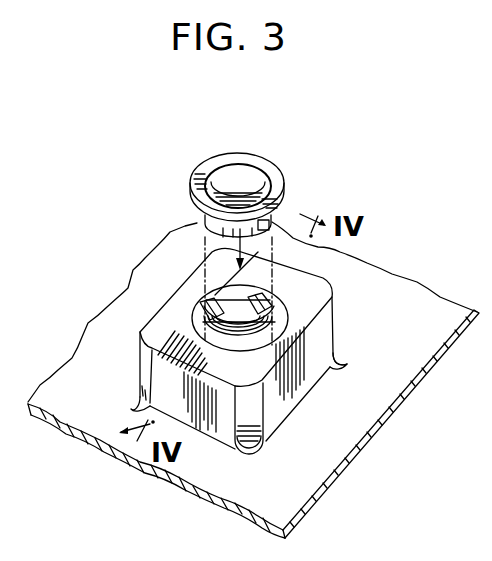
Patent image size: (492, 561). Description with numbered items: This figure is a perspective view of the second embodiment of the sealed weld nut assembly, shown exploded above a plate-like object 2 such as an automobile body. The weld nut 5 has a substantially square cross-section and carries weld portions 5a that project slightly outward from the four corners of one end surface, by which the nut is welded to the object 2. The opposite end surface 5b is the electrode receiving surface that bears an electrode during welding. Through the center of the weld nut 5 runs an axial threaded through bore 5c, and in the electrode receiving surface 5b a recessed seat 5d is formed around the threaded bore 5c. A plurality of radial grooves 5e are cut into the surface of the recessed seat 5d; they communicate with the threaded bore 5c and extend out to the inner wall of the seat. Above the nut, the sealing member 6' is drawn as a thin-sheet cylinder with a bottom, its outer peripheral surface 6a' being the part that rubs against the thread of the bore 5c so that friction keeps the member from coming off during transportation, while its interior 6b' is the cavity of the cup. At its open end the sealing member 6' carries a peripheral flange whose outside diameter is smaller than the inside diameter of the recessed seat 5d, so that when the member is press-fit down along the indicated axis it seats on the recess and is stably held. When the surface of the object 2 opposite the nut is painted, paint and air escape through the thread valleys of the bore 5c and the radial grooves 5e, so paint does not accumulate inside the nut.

The object 2 is at (387, 377).
The weld nut 5 is at (242, 348).
The weld portions 5a is at (266, 438).
The end surface 5b is at (326, 385).
The threaded through bore 5c is at (218, 296).
The recessed seat 5d is at (282, 320).
The radial grooves 5e is at (262, 298).
The sealing member 6' is at (246, 168).
The outer peripheral surface 6a' is at (273, 205).
The bore of ring 6b' is at (238, 152).